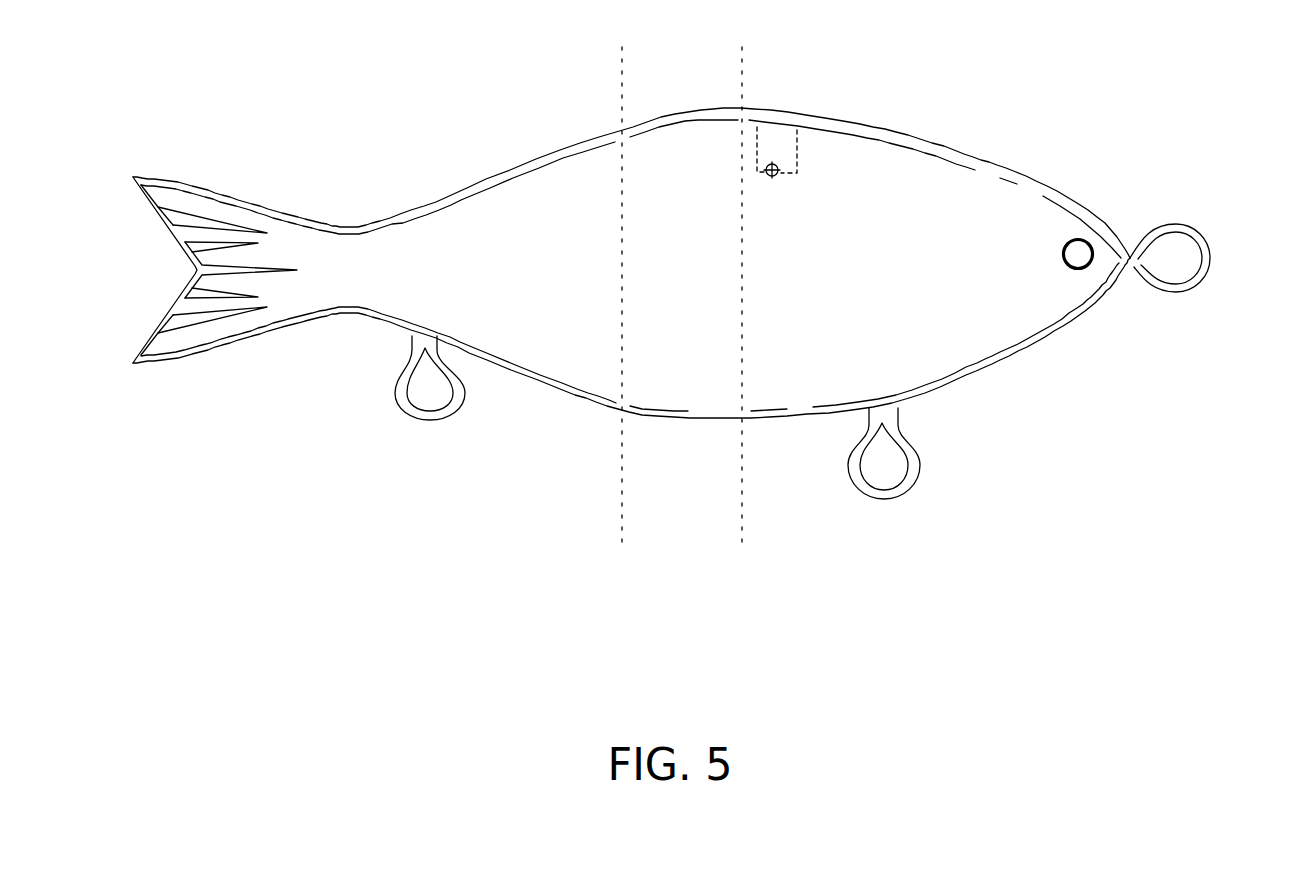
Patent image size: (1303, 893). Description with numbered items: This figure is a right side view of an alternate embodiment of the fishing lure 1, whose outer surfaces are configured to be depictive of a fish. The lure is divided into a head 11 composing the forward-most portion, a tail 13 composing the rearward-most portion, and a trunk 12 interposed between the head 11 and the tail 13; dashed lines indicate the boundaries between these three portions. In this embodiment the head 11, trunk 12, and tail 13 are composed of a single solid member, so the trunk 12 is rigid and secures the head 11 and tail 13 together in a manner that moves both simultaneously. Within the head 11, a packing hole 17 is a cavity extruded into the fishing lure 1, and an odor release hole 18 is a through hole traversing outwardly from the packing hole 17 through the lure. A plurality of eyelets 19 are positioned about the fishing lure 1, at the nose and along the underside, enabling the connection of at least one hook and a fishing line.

The fishing lure 1 is at (1186, 43).
The head 11 is at (822, 297).
The trunk 12 is at (670, 297).
The tail 13 is at (522, 297).
The packing hole 17 is at (790, 160).
The odor release hole 18 is at (772, 178).
The eyelets 19 is at (445, 410).